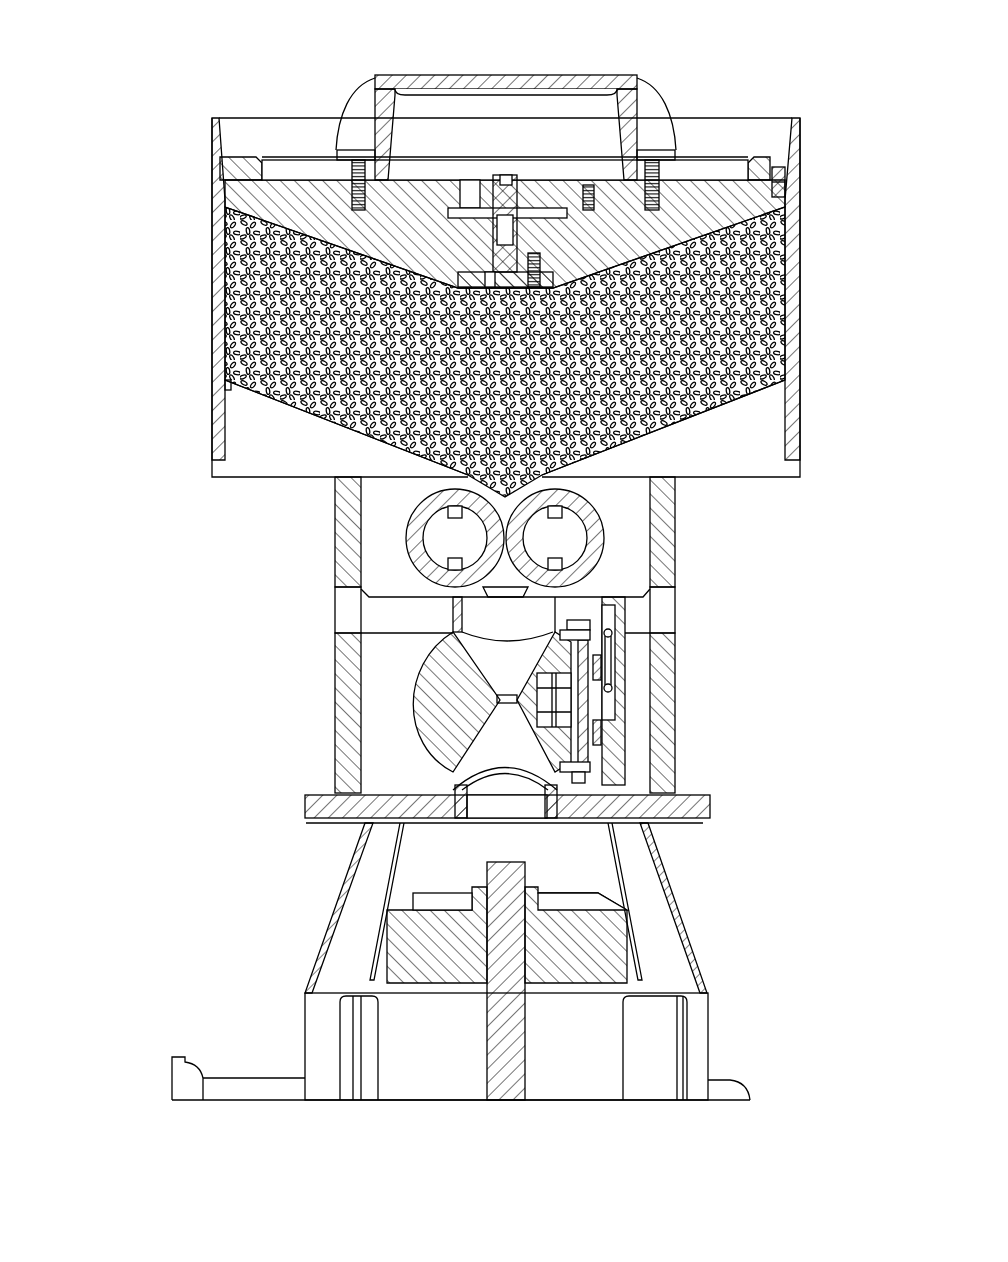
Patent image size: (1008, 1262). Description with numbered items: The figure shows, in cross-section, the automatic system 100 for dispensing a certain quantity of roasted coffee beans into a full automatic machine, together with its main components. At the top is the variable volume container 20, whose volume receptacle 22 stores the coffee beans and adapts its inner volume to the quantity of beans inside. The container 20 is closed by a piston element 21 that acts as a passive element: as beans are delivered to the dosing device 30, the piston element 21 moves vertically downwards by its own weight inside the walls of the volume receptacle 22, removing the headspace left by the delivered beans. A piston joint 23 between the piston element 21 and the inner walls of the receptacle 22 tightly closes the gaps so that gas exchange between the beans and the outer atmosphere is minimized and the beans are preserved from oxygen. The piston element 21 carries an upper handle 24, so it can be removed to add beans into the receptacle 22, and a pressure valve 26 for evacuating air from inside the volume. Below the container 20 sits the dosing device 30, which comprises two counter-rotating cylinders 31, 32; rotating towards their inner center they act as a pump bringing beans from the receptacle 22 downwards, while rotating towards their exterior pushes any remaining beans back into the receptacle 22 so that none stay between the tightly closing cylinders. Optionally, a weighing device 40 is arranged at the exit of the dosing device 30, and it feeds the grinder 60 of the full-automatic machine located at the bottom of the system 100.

The automatic system 100 is at (130, 515).
The variable volume container 20 is at (215, 232).
The piston element 21 is at (722, 207).
The volume receptacle 22 is at (222, 327).
The piston joint 23 is at (790, 181).
The upper handle 24 is at (377, 86).
The pressure valve 26 is at (518, 196).
The dosing device 30 is at (376, 512).
The counter-rotating cylinder 31 is at (432, 556).
The counter-rotating cylinder 32 is at (598, 542).
The weighing device 40 is at (420, 690).
The grinder 60 is at (592, 947).